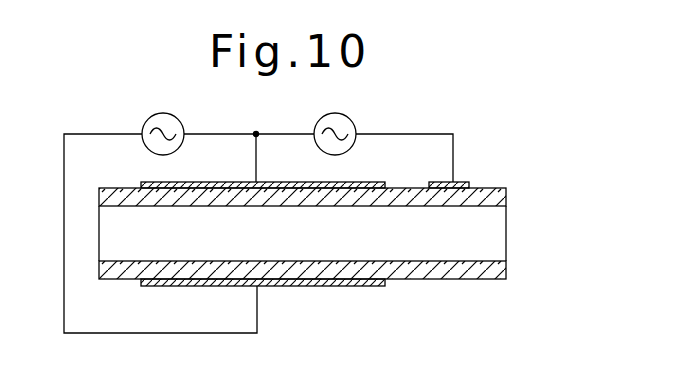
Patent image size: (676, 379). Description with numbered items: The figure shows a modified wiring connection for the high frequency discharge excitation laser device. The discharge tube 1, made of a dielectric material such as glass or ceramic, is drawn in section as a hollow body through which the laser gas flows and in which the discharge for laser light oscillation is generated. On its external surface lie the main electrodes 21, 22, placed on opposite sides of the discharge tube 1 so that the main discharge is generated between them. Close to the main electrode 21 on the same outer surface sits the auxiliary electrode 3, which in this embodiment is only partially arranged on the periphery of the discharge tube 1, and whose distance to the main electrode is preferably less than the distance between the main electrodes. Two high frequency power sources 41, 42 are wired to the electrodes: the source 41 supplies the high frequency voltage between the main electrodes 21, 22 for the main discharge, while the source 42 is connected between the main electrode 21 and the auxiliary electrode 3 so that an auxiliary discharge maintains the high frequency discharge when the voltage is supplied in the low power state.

The discharge tube 1 is at (493, 188).
The main electrode 21 is at (377, 182).
The main electrode 22 is at (363, 286).
The auxiliary electrode 3 is at (461, 182).
The power source 41 is at (192, 122).
The power source 42 is at (355, 122).